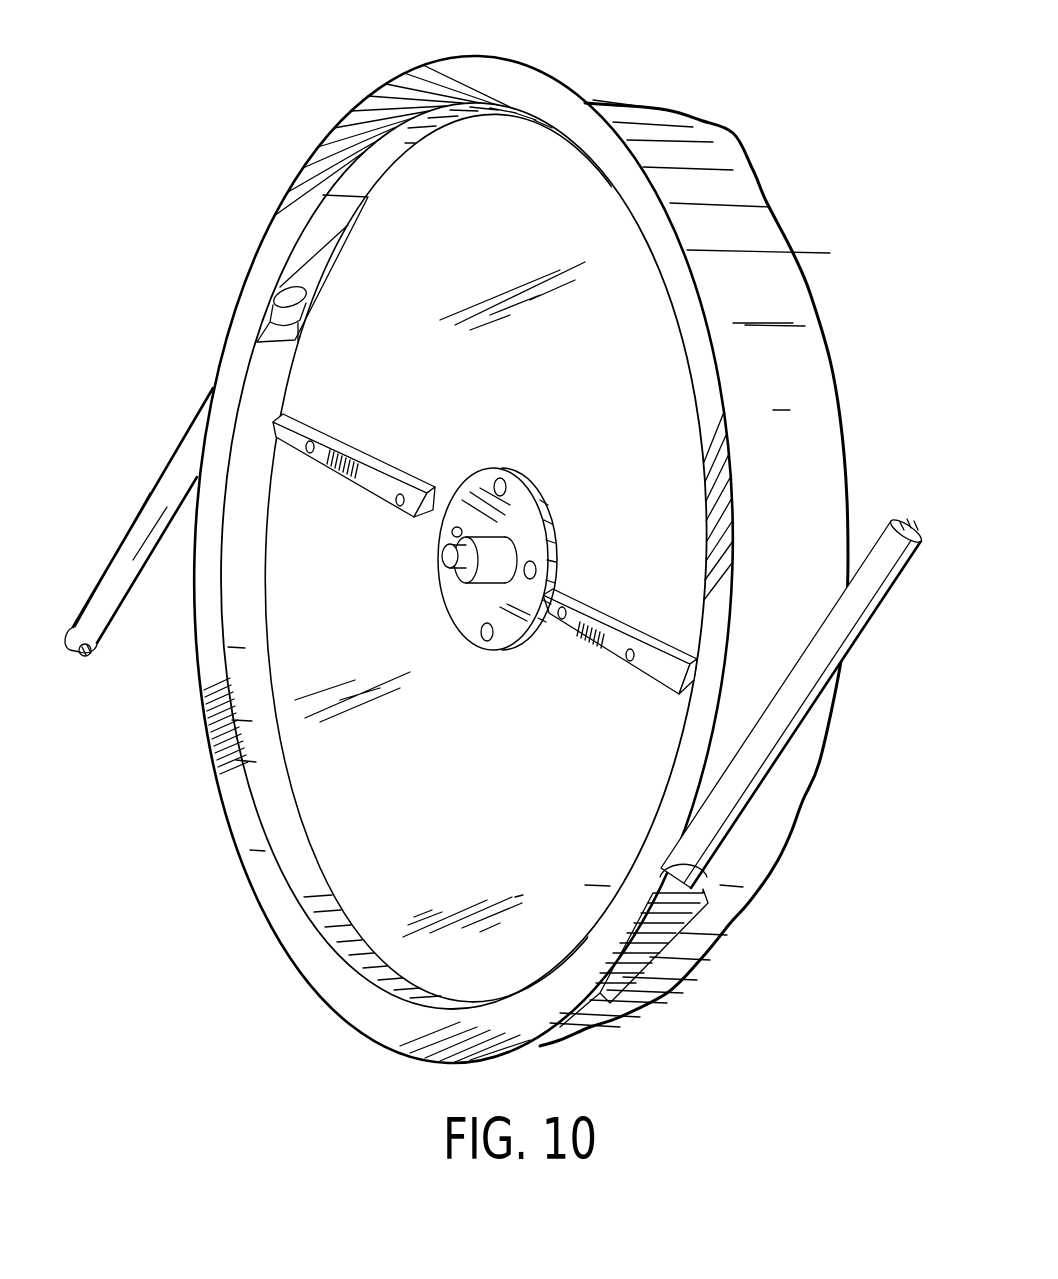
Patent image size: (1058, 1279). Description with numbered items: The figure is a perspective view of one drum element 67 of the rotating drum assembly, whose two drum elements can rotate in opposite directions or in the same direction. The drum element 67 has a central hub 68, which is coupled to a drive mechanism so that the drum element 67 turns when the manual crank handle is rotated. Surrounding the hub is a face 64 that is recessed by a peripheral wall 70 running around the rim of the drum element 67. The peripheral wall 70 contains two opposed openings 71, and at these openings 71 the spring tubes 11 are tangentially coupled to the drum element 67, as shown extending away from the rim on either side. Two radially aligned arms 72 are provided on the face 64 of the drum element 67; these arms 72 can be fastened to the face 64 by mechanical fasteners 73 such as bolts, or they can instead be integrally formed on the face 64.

The spring tube 11 is at (135, 540).
The face 64 is at (446, 821).
The drum element 67 is at (731, 125).
The central hub 68 is at (522, 508).
The peripheral wall 70 is at (393, 158).
The opening 71 is at (318, 278).
The arm 72 is at (343, 444).
The mechanical fastener 73 is at (309, 454).